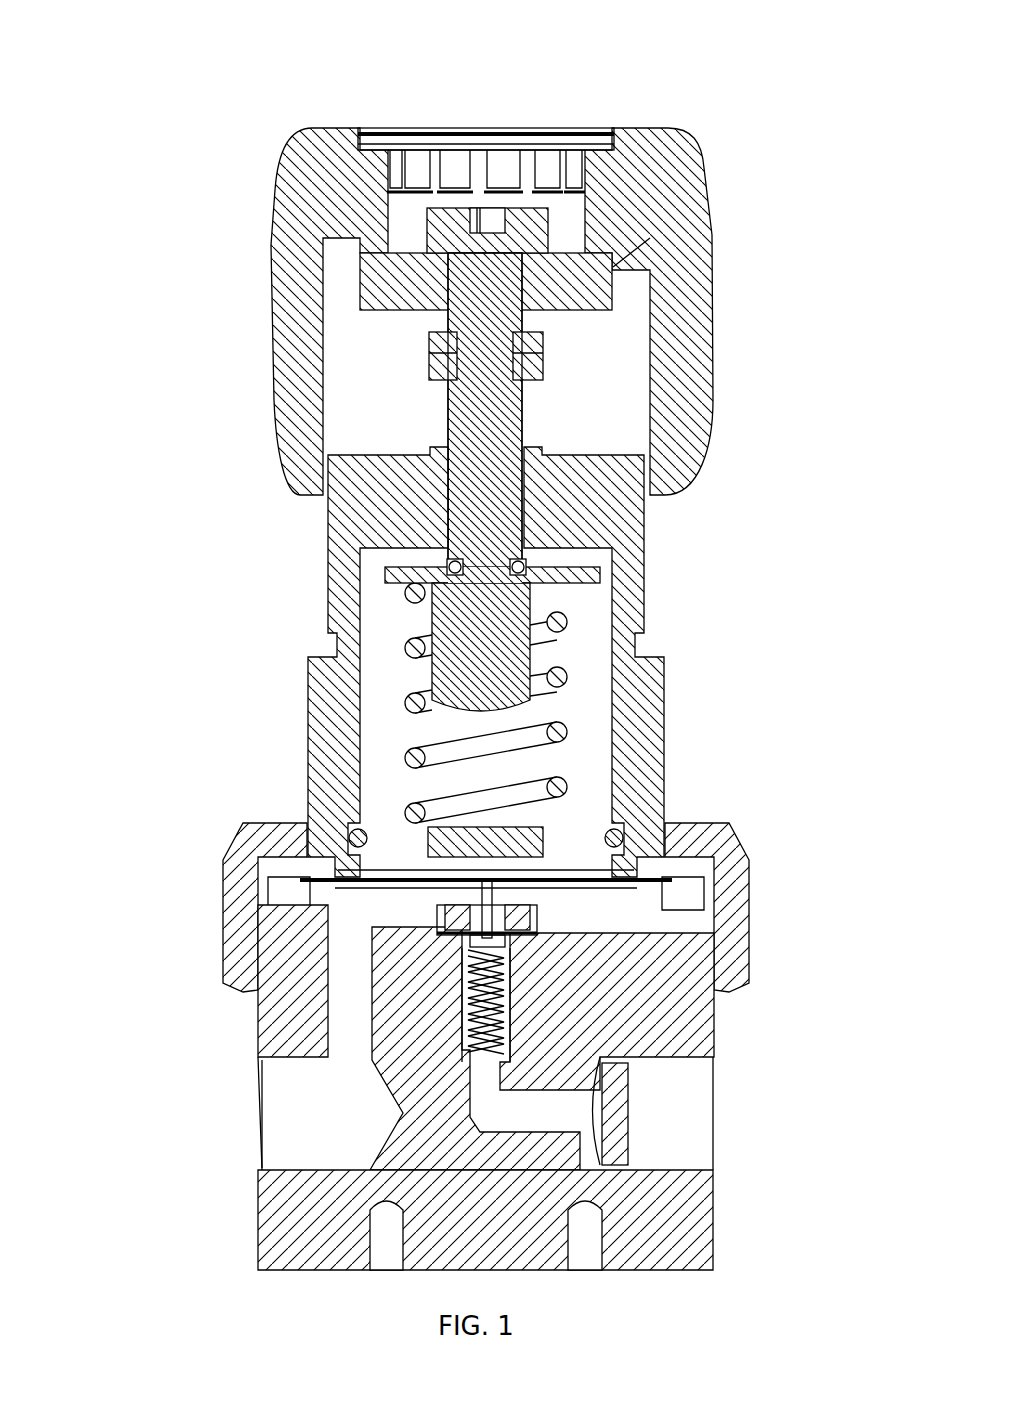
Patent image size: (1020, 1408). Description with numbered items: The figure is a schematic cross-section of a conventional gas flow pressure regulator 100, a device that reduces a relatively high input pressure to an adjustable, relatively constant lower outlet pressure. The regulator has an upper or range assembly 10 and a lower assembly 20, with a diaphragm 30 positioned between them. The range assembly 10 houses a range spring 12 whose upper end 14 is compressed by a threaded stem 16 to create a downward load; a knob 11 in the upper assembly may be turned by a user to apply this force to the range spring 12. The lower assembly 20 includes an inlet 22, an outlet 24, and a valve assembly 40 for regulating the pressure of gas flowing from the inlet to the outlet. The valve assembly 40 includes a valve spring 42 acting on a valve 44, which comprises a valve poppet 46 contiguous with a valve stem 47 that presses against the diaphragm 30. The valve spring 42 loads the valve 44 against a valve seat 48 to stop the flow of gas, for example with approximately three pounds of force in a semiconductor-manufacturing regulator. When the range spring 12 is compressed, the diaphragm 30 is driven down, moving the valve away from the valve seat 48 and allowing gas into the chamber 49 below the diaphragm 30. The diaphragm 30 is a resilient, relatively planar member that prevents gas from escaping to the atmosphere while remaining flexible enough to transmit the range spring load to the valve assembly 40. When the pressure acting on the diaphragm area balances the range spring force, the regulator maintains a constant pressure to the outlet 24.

The pressure regulator 100 is at (258, 96).
The range assembly 10 is at (266, 212).
The knob 11 is at (478, 128).
The range spring 12 is at (422, 752).
The upper end 14 is at (560, 668).
The threaded stem 16 is at (497, 628).
The diaphragm 30 is at (530, 868).
The chamber 49 is at (540, 895).
The valve stem 47 is at (480, 888).
The valve 44 is at (437, 925).
The valve poppet 46 is at (470, 985).
The valve spring 42 is at (473, 1027).
The valve assembly 40 is at (533, 890).
The valve seat 48 is at (523, 943).
The outlet 24 is at (282, 1103).
The inlet 22 is at (690, 1113).
The lower assembly 20 is at (268, 1250).